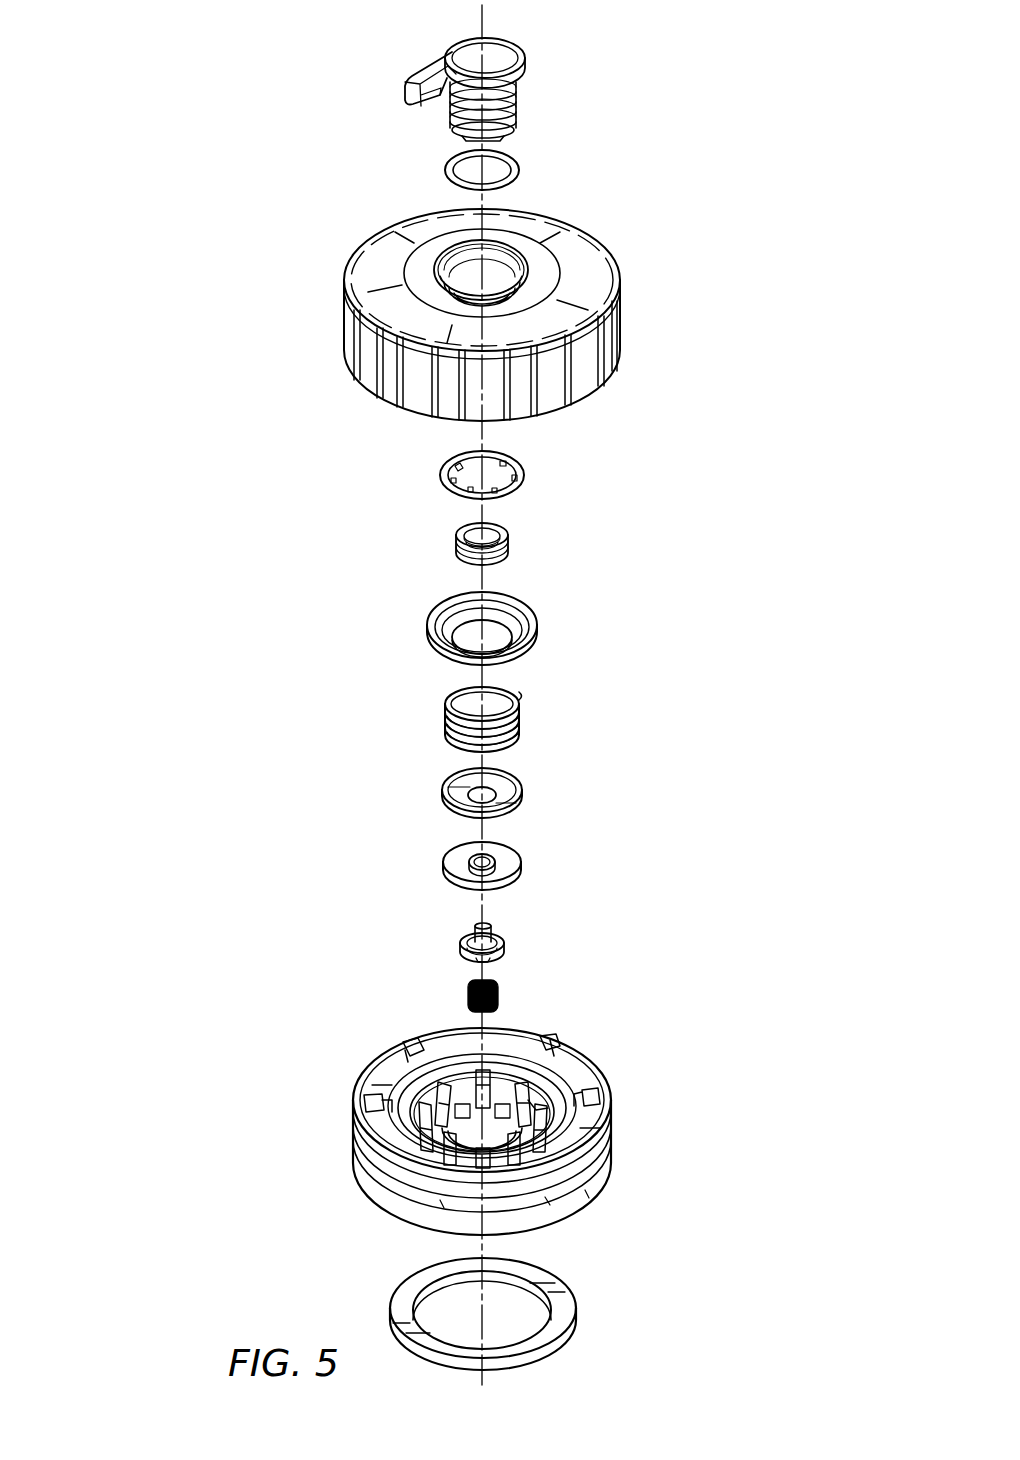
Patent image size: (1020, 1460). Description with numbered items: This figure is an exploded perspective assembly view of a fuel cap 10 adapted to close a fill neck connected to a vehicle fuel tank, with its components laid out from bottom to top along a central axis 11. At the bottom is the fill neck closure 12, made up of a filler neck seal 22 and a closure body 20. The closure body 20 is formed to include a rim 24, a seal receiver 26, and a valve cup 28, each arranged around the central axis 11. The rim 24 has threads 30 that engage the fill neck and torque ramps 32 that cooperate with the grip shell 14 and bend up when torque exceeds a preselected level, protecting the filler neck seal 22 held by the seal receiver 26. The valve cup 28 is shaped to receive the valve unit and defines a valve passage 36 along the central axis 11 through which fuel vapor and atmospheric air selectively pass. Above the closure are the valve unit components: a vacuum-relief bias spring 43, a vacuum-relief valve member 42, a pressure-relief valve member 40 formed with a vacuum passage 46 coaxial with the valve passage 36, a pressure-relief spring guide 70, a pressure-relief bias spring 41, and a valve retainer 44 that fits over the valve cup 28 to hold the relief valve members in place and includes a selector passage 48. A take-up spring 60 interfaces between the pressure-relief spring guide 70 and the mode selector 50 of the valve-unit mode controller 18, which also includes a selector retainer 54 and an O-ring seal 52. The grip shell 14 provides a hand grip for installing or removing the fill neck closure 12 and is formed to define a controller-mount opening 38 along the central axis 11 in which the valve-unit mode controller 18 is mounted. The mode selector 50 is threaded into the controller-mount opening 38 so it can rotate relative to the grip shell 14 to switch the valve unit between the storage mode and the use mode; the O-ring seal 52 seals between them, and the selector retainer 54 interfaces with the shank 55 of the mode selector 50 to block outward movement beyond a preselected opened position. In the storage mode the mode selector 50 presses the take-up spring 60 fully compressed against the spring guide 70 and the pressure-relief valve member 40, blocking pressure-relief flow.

The fuel cap 10 is at (162, 133).
The central axis 11 is at (488, 10).
The fill neck closure 12 is at (674, 1243).
The grip shell 14 is at (626, 246).
The valve-unit mode controller 18 is at (380, 82).
The closure body 20 is at (618, 1086).
The filler neck seal 22 is at (574, 1282).
The rim 24 is at (366, 1050).
The seal receiver 26 is at (366, 1190).
The valve cup 28 is at (463, 1076).
The threads 30 is at (396, 1226).
The torque ramps 32 is at (406, 1048).
The valve passage 36 is at (540, 1094).
The controller-mount opening 38 is at (500, 252).
The pressure-relief valve member 40 is at (541, 858).
The pressure-relief bias spring 41 is at (524, 709).
The vacuum-relief valve member 42 is at (509, 941).
The vacuum-relief bias spring 43 is at (504, 990).
The valve retainer 44 is at (570, 606).
The vacuum passage 46 is at (492, 862).
The selector passage 48 is at (494, 634).
The mode selector 50 is at (425, 46).
The O-ring seal 52 is at (445, 162).
The selector retainer 54 is at (538, 459).
The shank 55 is at (518, 115).
The take-up spring 60 is at (513, 531).
The pressure-relief spring guide 70 is at (526, 788).